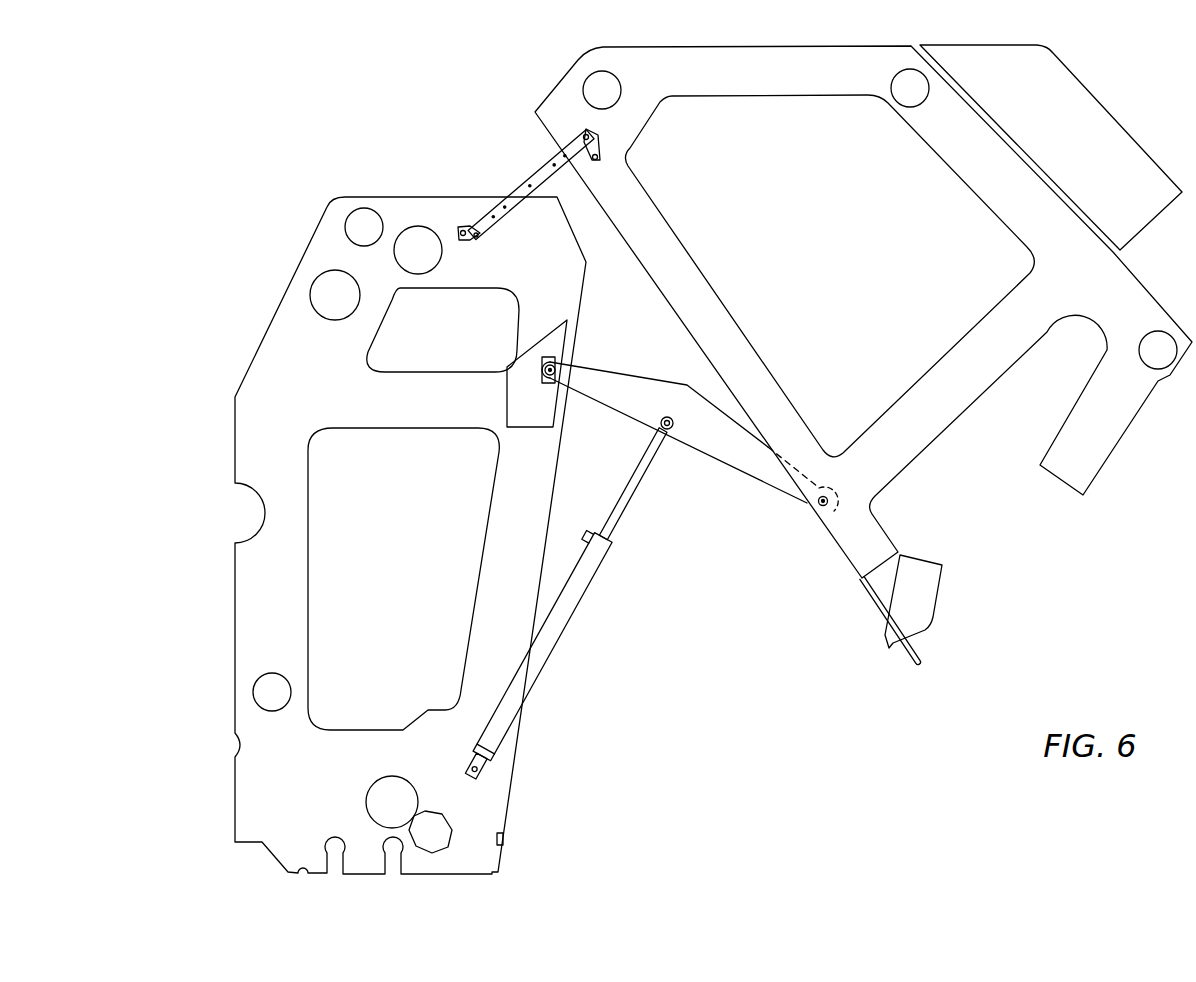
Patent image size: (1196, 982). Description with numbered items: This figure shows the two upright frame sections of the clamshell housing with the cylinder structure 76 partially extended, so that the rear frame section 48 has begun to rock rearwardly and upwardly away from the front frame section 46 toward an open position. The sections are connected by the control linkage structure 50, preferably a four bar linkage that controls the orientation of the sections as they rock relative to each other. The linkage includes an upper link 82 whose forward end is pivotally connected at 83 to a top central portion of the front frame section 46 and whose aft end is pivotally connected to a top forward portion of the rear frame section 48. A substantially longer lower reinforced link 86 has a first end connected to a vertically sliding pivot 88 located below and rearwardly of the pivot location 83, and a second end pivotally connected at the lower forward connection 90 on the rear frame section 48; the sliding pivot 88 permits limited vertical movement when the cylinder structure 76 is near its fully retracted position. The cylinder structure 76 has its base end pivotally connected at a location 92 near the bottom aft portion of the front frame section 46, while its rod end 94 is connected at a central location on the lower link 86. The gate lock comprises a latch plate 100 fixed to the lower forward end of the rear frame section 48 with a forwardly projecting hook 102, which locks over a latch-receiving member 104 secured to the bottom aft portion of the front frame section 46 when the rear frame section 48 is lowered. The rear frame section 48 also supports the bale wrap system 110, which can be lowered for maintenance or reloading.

The front frame section 46 is at (298, 396).
The rear frame section 48 is at (1052, 280).
The control linkage structure 50 is at (508, 152).
The cylinder structure 76 is at (569, 620).
The upper link 82 is at (520, 200).
The pivot location 83 is at (478, 228).
The lower reinforced link 86 is at (725, 464).
The vertically sliding pivot 88 is at (560, 362).
The pin 90 is at (819, 513).
The base end pivot location 92 is at (483, 773).
The cylinder rod end 94 is at (662, 417).
The latch plate 100 is at (922, 592).
The hook 102 is at (890, 648).
The latch-receiving member 104 is at (505, 840).
The bale wrap system 110 is at (1048, 143).